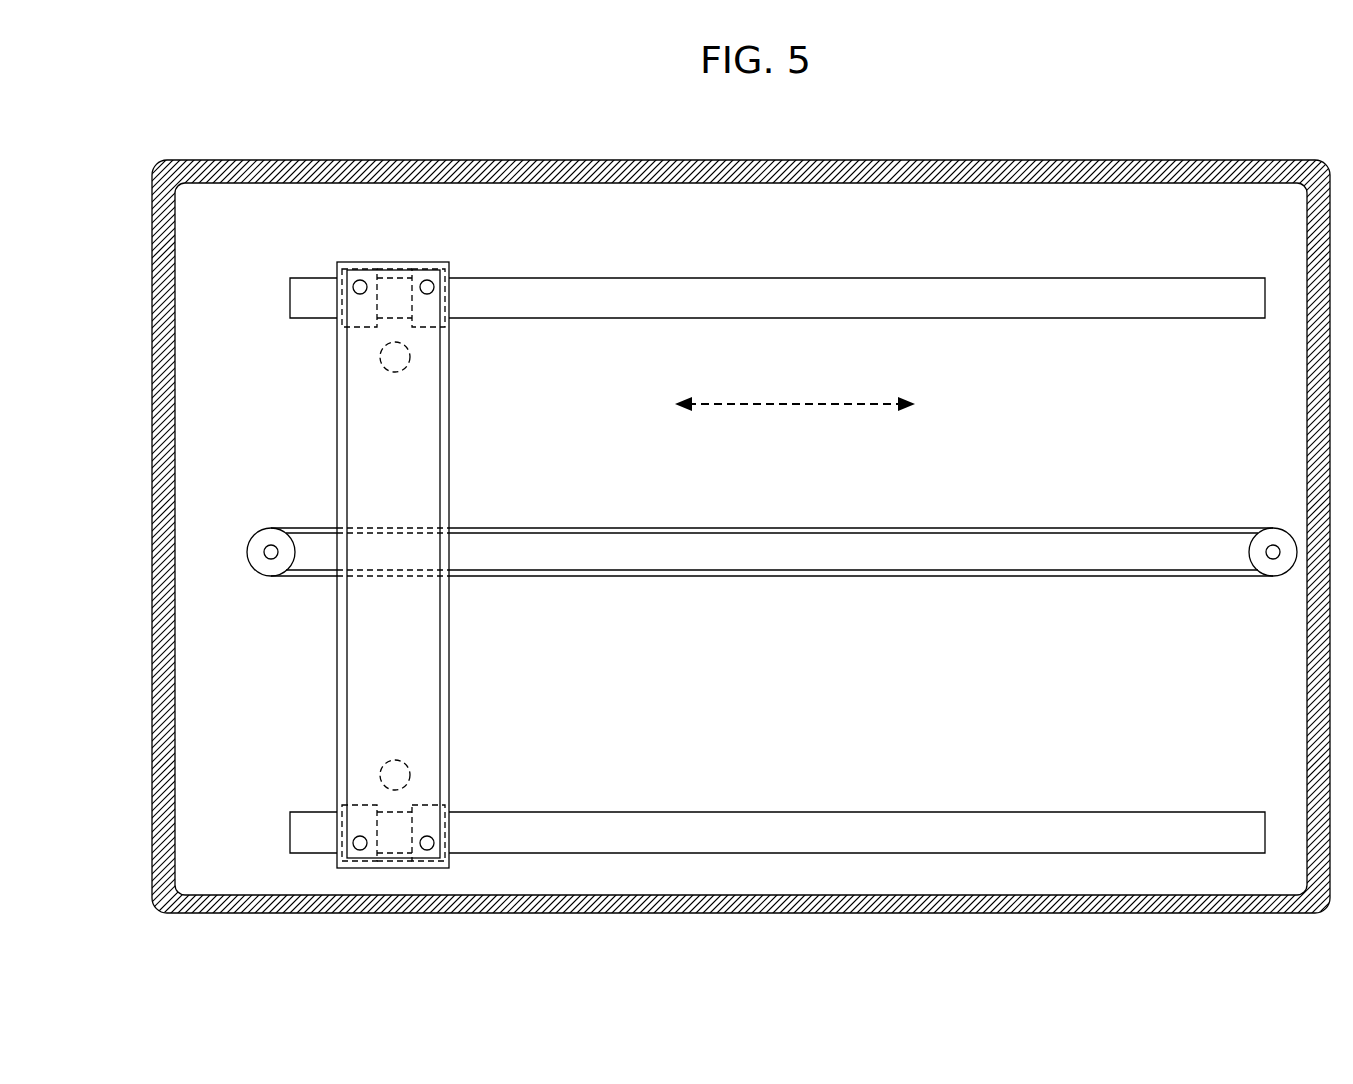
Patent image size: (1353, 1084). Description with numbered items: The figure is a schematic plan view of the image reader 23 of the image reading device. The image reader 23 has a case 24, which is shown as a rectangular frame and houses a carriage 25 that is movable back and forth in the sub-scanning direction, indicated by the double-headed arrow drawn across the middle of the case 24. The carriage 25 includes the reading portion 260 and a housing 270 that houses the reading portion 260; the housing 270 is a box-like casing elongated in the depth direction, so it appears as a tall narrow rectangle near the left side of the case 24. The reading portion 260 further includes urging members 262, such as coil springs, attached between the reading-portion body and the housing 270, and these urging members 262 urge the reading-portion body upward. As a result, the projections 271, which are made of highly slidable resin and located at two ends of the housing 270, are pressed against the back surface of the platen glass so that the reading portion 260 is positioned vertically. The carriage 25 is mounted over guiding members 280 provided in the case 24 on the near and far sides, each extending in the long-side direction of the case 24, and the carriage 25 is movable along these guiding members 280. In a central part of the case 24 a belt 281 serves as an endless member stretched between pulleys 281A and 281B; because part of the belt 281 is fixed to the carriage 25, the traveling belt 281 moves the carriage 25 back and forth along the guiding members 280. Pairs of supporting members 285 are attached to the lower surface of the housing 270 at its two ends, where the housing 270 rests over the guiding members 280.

The image reader 23 is at (1057, 149).
The case 24 is at (156, 163).
The carriage 25 is at (461, 478).
The reading portion 260 is at (392, 642).
The urging members 262 is at (398, 356).
The housing 270 is at (343, 437).
The projections 271 is at (357, 282).
The guiding members 280 is at (778, 292).
The belt 281 is at (775, 528).
The pulley 281A is at (263, 535).
The pulley 281B is at (1276, 538).
The supporting members 285 is at (363, 307).